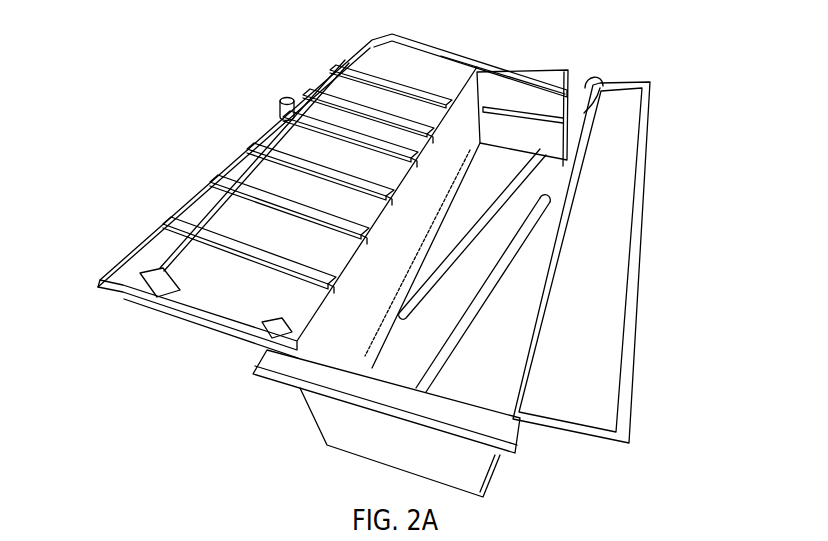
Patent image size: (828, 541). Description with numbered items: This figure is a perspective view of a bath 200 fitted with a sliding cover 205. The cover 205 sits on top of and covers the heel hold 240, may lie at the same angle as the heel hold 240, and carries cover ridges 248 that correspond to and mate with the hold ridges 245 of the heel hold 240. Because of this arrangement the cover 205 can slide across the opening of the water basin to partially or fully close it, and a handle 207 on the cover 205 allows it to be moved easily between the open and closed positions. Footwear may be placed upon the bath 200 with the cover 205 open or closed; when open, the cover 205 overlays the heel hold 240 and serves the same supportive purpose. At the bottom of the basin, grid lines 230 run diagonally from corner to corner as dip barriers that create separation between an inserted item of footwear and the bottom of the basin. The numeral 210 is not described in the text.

The bath 200 is at (677, 222).
The cover 205 is at (363, 100).
The handle 207 is at (282, 100).
The drawer box 210 is at (348, 425).
The grid lines 230 is at (527, 231).
The heel hold 240 is at (207, 263).
The hold ridges 245 is at (350, 235).
The cover ridges 248 is at (262, 153).